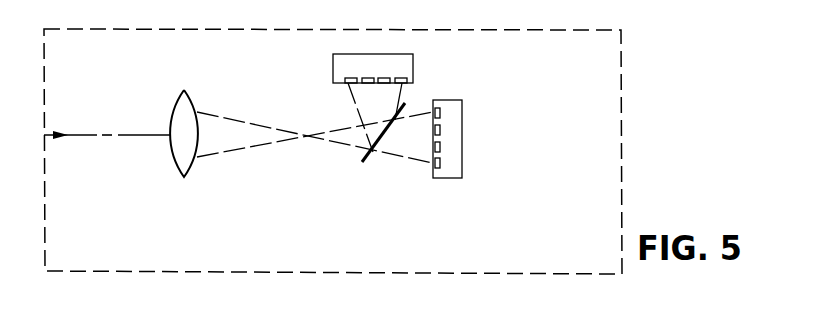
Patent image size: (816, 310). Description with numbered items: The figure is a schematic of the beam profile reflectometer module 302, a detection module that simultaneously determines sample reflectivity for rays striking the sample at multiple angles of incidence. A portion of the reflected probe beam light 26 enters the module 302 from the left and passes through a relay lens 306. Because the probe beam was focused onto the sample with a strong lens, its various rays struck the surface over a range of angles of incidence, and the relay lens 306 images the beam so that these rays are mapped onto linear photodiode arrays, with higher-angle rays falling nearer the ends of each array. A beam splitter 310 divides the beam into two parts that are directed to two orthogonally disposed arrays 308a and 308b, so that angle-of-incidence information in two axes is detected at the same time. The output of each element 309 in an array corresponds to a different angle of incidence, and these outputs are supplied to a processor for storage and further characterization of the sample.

The reflected probe beam light 26 is at (138, 133).
The beam profile reflectometer module 302 is at (622, 104).
The relay lens 306 is at (189, 172).
The linear photodiode array 308a is at (449, 178).
The linear photodiode array 308b is at (333, 63).
The element 309 is at (440, 128).
The beam splitter 310 is at (368, 156).